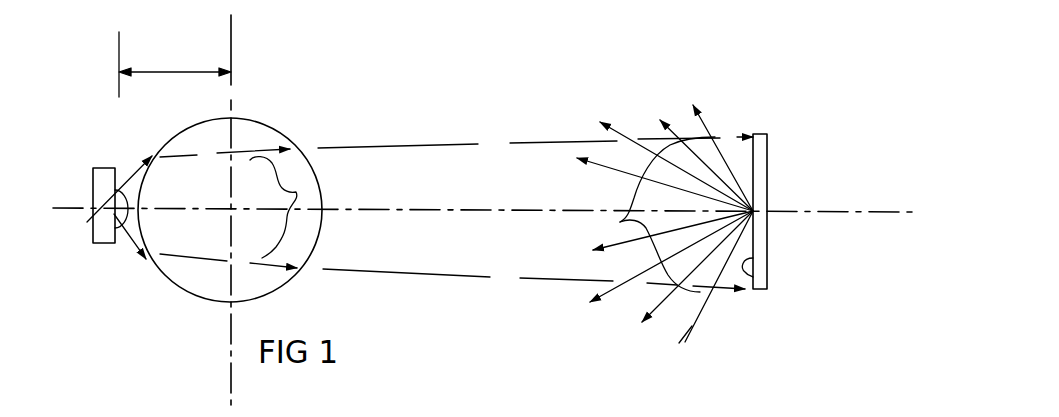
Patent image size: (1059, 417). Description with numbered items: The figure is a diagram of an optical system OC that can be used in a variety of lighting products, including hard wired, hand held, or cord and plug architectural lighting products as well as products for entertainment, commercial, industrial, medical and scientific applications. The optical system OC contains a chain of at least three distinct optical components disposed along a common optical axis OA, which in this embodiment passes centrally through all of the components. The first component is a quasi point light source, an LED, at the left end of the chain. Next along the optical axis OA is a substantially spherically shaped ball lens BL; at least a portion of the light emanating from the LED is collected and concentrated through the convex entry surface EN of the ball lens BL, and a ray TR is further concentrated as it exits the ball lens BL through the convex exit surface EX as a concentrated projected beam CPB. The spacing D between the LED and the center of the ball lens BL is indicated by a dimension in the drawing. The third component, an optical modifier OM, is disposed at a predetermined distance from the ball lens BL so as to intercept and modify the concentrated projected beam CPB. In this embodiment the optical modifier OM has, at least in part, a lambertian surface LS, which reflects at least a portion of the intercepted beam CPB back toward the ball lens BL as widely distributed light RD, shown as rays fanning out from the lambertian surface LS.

The element LED is at (93, 215).
The convex entry surface EN is at (117, 189).
The ball lens BL is at (182, 288).
The distance D is at (175, 212).
The convex exit surface EX is at (302, 152).
The transmitted ray TR is at (292, 192).
The concentrated projected beam CPB is at (420, 152).
The widely distributed light RD is at (620, 222).
The lambertian surface LS is at (768, 278).
The optical axis OA is at (872, 224).
The optical system OC is at (790, 108).
The optical modifier OM is at (785, 187).